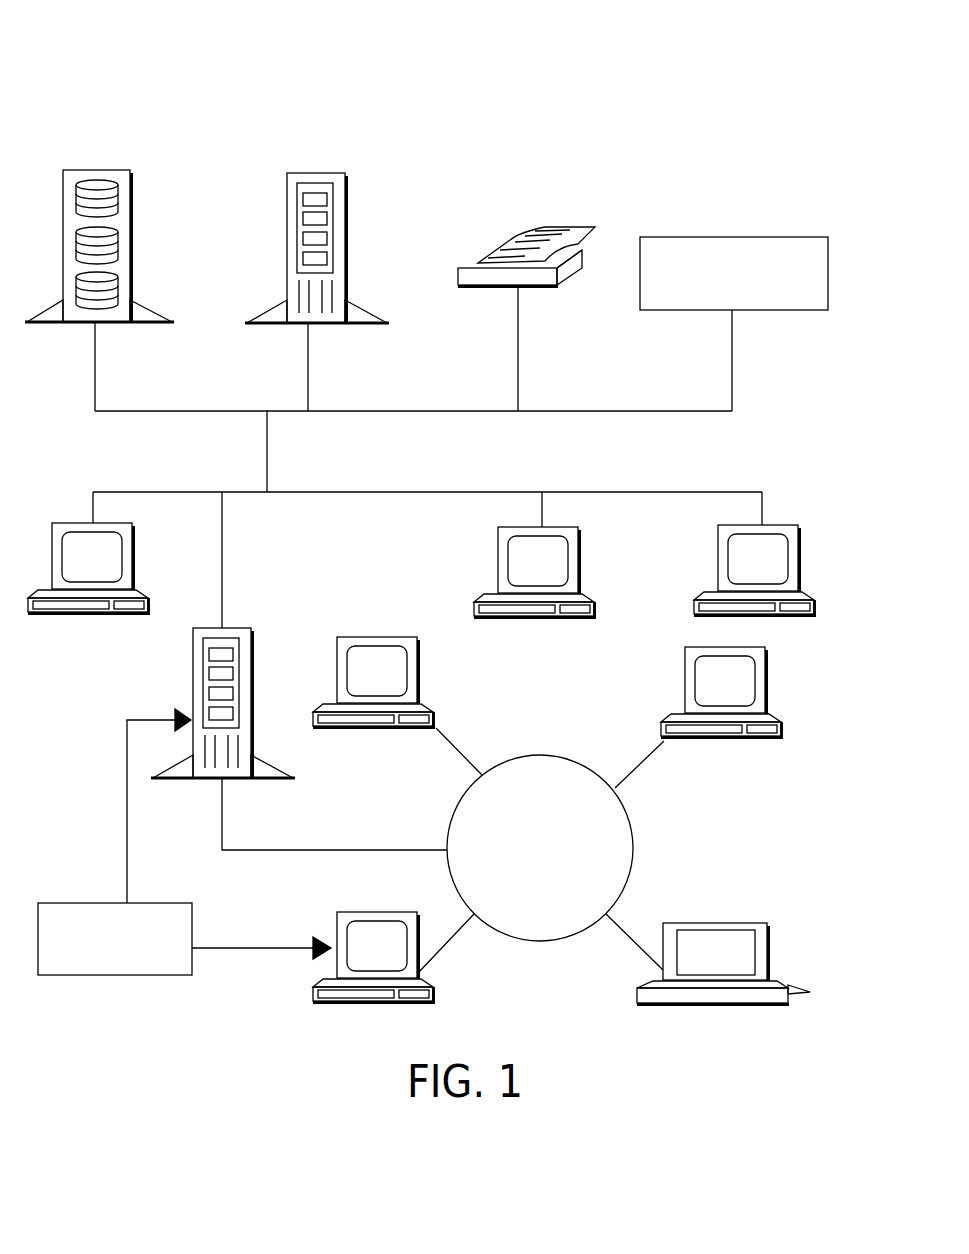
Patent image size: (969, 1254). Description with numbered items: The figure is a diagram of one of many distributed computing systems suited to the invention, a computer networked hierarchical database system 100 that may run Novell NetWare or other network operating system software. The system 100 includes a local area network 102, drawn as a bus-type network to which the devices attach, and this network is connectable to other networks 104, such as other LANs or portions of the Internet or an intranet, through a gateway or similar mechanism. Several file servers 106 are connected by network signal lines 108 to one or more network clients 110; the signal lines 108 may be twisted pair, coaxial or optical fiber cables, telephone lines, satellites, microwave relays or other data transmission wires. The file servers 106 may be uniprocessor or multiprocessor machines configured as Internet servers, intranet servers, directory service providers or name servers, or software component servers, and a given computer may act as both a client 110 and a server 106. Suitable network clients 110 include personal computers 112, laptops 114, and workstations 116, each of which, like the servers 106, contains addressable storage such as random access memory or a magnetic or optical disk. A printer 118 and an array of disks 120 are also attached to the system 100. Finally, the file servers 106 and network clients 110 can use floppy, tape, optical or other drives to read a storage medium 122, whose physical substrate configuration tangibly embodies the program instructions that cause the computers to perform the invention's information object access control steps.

The computer networked hierarchical database system 100 is at (167, 43).
The local area network 102 is at (459, 407).
The other networks 104 is at (751, 236).
The file server 106 is at (304, 471).
The network signal line 108 is at (334, 671).
The network client 110 is at (538, 561).
The personal computer 112 is at (442, 689).
The laptop 114 is at (736, 938).
The workstation 116 is at (810, 545).
The printer 118 is at (571, 211).
The array of disks 120 is at (131, 218).
The storage medium 122 is at (184, 842).